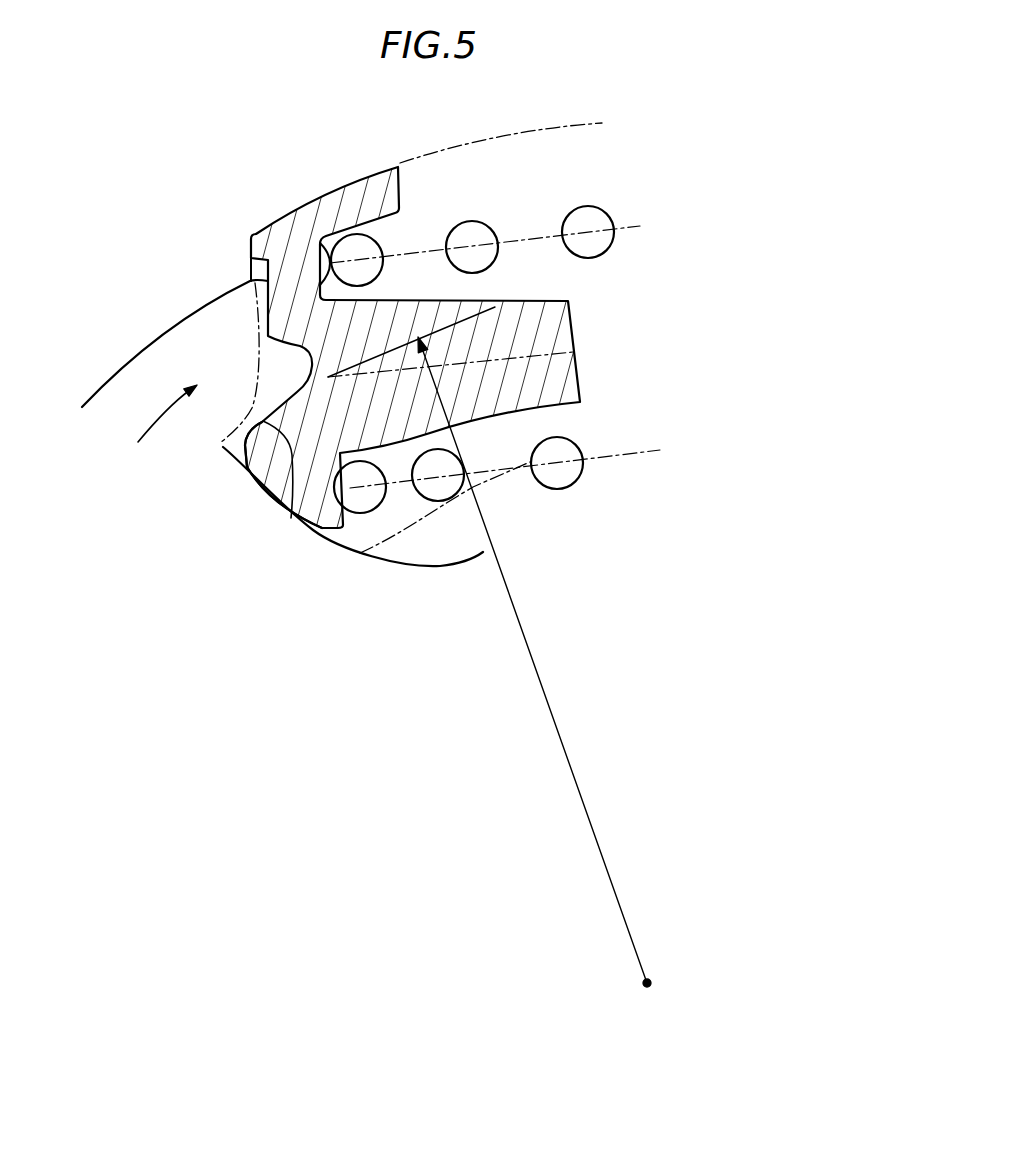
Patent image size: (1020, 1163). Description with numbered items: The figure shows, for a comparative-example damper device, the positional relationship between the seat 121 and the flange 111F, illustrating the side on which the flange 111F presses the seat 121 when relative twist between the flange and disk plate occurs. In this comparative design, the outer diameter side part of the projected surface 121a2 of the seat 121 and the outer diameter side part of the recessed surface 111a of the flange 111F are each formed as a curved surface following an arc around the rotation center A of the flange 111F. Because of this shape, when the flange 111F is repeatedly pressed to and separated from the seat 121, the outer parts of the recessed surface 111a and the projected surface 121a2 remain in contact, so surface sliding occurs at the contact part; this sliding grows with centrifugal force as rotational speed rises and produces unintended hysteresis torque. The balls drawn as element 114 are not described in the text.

The ball 114 is at (595, 220).
The seat 121 is at (552, 323).
The flange 111F is at (138, 375).
The projected surface 121a2 is at (243, 437).
The recessed surface 111a is at (291, 520).
The rotation center A is at (535, 677).